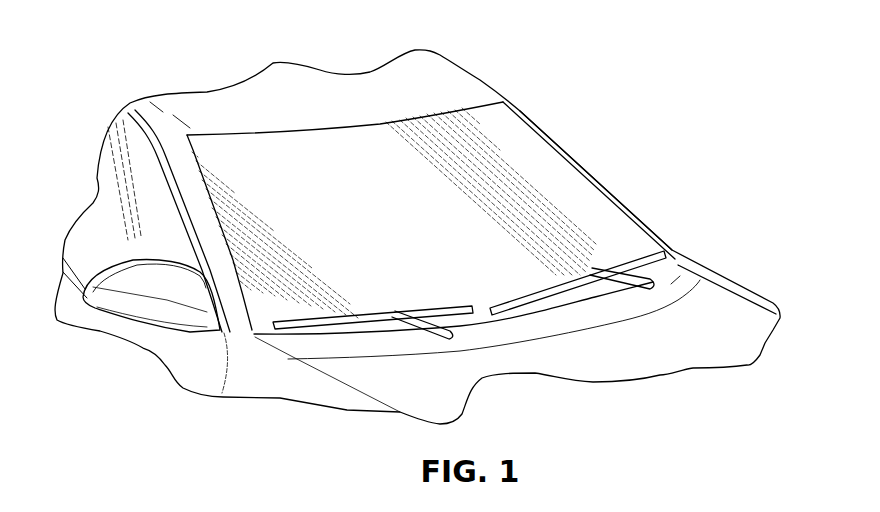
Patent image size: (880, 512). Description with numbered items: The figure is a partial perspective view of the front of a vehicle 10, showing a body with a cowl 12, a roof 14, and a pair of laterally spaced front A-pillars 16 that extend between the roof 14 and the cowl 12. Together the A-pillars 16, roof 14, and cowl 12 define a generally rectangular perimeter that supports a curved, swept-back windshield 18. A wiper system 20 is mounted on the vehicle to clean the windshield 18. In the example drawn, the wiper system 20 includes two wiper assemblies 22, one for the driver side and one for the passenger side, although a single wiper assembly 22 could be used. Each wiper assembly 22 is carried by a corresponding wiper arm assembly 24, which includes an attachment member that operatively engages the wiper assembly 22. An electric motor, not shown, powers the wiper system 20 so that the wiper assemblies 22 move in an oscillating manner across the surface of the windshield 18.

The vehicle 10 is at (82, 129).
The cowl 12 is at (673, 283).
The roof 14 is at (449, 85).
The A-pillars 16 is at (197, 209).
The windshield 18 is at (528, 155).
The wiper system 20 is at (545, 356).
The wiper assemblies 22 is at (427, 304).
The wiper arm assembly 24 is at (422, 343).